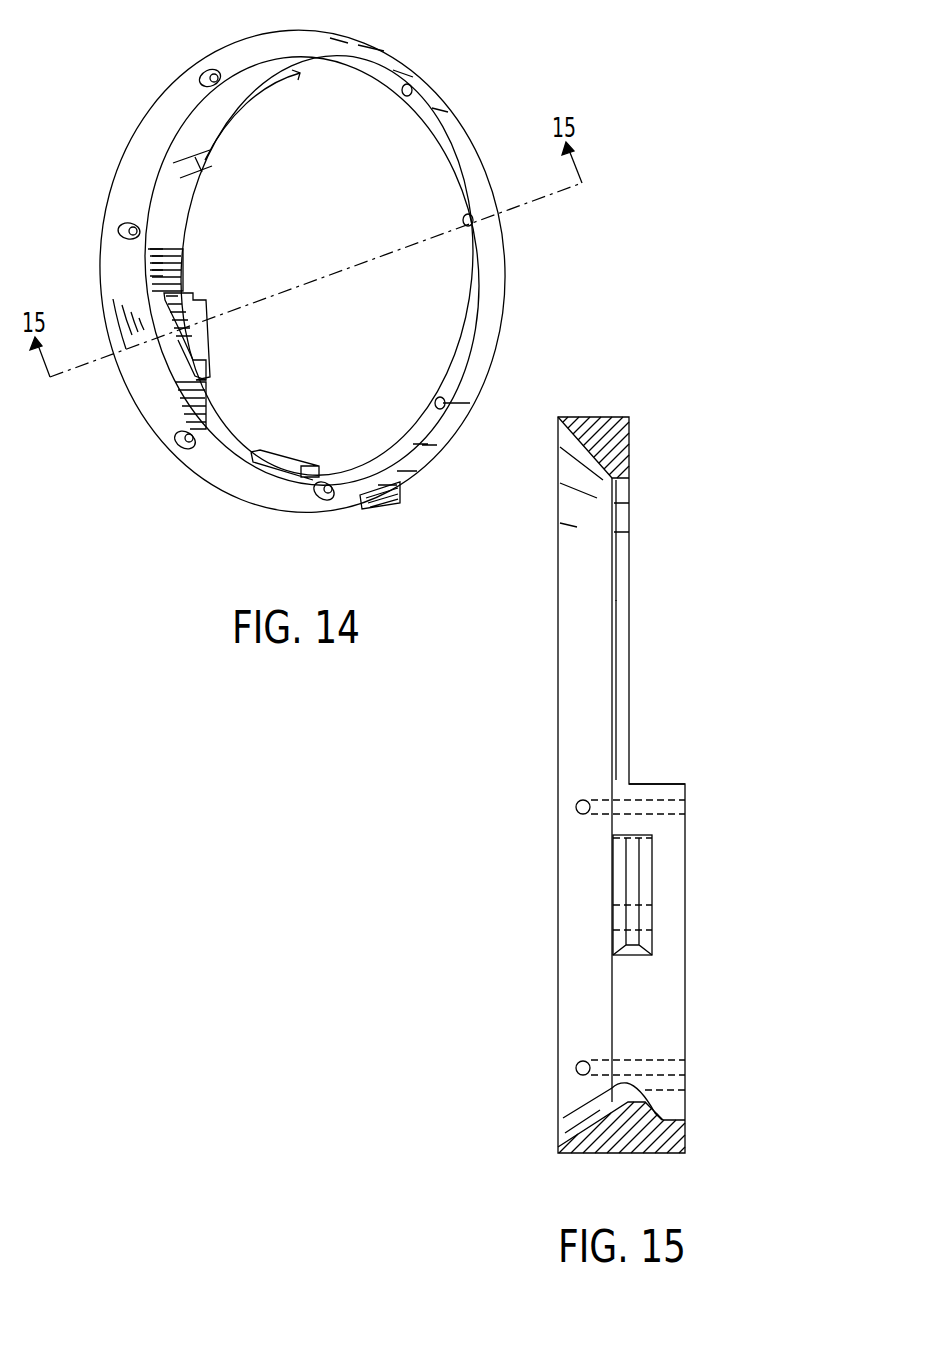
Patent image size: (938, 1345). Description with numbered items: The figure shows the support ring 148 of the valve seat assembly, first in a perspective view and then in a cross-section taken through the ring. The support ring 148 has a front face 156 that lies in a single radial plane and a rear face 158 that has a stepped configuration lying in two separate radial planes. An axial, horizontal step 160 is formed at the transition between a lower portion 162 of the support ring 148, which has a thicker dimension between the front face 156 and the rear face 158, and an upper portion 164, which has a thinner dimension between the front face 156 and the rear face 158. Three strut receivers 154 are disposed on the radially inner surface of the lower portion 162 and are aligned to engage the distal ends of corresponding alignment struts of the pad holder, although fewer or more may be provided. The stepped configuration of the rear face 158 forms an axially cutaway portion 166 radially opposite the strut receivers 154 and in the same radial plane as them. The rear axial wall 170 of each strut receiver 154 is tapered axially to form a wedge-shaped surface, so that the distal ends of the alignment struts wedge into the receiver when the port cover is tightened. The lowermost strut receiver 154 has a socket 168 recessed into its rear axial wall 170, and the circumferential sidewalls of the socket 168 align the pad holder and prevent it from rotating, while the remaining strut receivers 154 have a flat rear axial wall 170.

In FIG. 14, the support ring 148 is at (490, 320).
In FIG. 15, the support ring 148 is at (608, 417).
In FIG. 14, the strut receivers 154 is at (206, 154).
In FIG. 15, the strut receivers 154 is at (633, 870).
In FIG. 15, the front face 156 is at (558, 568).
In FIG. 14, the rear face 158 is at (144, 126).
In FIG. 15, the rear face 158 is at (632, 513).
In FIG. 15, the axial step 160 is at (663, 784).
In FIG. 15, the lower portion 162 is at (688, 1000).
In FIG. 15, the upper portion 164 is at (630, 610).
In FIG. 15, the axially cutaway portion 166 is at (721, 672).
In FIG. 14, the socket 168 is at (197, 351).
In FIG. 15, the socket 168 is at (667, 1112).
In FIG. 15, the rear axial wall 170 is at (640, 890).